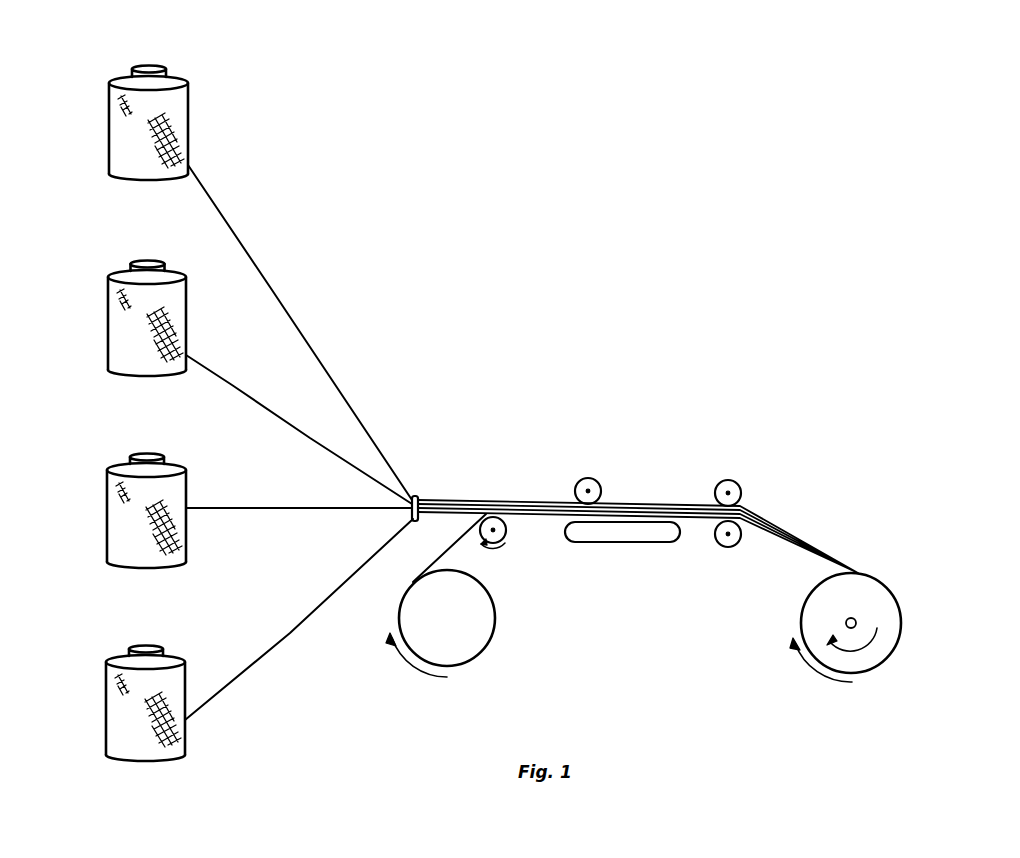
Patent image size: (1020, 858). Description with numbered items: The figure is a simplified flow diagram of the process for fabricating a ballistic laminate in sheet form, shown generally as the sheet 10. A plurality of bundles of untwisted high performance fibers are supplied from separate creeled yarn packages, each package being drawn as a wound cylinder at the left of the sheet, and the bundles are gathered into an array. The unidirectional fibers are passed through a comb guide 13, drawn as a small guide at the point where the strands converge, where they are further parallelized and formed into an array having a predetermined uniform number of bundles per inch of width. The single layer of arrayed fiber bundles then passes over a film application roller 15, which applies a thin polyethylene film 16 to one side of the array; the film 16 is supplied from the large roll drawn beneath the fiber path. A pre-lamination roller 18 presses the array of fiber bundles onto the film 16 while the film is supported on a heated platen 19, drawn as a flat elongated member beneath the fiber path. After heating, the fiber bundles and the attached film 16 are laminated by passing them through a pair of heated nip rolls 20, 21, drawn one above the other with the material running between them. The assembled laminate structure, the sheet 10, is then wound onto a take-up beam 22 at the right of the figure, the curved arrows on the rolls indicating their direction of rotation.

The ballistic laminate structure in sheet form 10 is at (815, 545).
The comb guide 13 is at (419, 496).
The film application roller 15 is at (505, 535).
The polyethylene film 16 is at (450, 552).
The pre-lamination roller 18 is at (585, 478).
The heated platen 19 is at (635, 543).
The heated nip roll 20 is at (720, 482).
The heated nip roll 21 is at (722, 548).
The take-up beam 22 is at (812, 617).